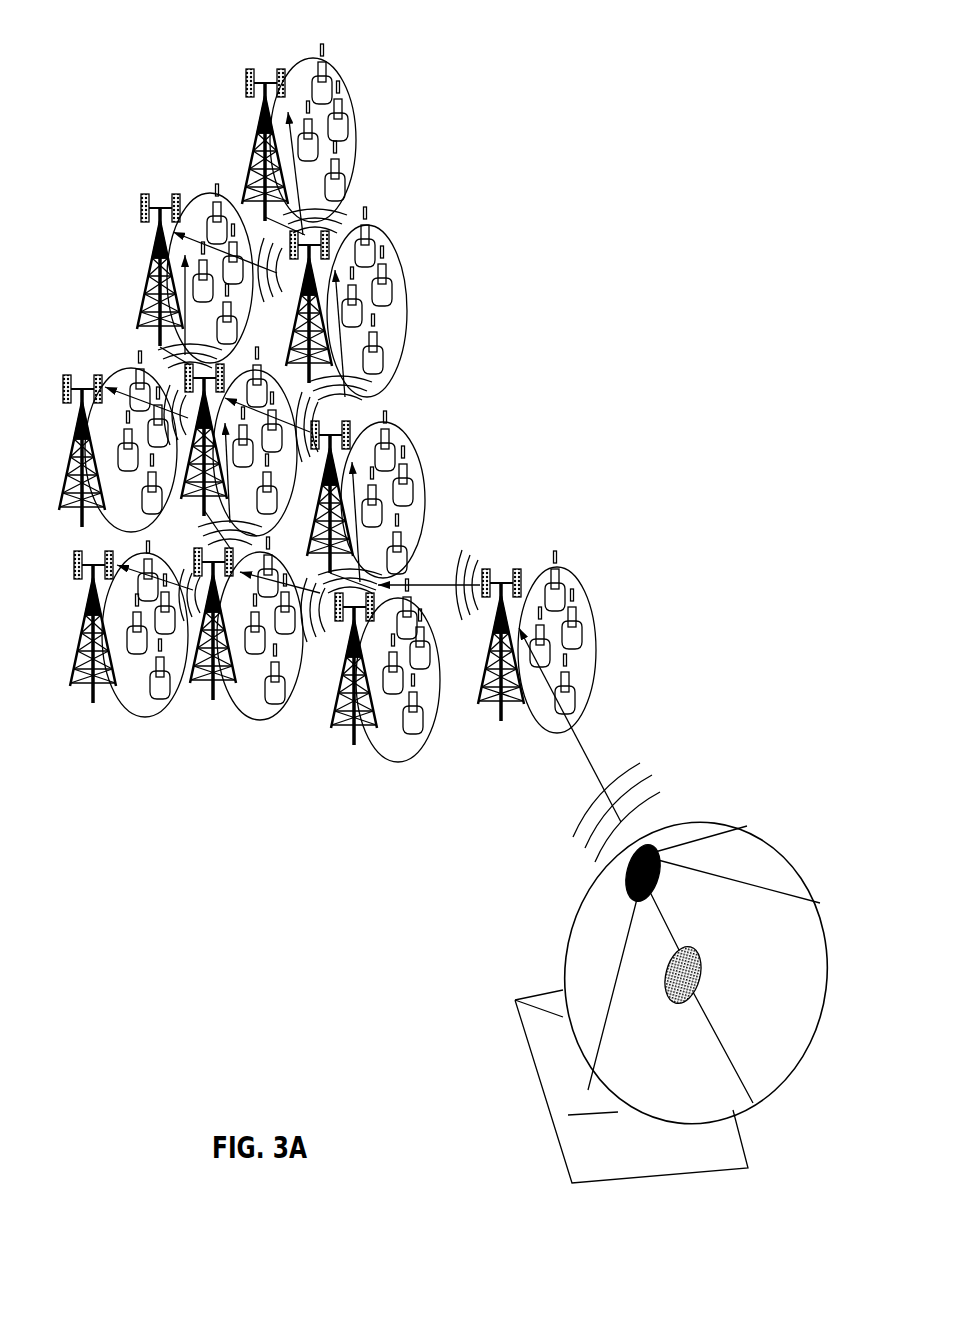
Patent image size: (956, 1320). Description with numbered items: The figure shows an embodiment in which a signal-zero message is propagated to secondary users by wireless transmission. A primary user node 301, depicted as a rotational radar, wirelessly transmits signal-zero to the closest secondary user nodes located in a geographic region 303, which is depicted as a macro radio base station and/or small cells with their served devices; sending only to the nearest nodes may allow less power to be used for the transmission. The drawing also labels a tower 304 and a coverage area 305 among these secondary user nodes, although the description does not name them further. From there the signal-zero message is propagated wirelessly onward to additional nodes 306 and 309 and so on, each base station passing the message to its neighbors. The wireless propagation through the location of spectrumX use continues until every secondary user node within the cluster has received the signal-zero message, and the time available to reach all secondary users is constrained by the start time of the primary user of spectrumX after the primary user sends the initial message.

The primary user node 301 is at (530, 1052).
The geographic region 303 is at (595, 658).
The base station tower 304 is at (498, 722).
The cell coverage area with user devices 305 is at (373, 759).
The additional node 306 is at (332, 722).
The additional node 309 is at (213, 700).